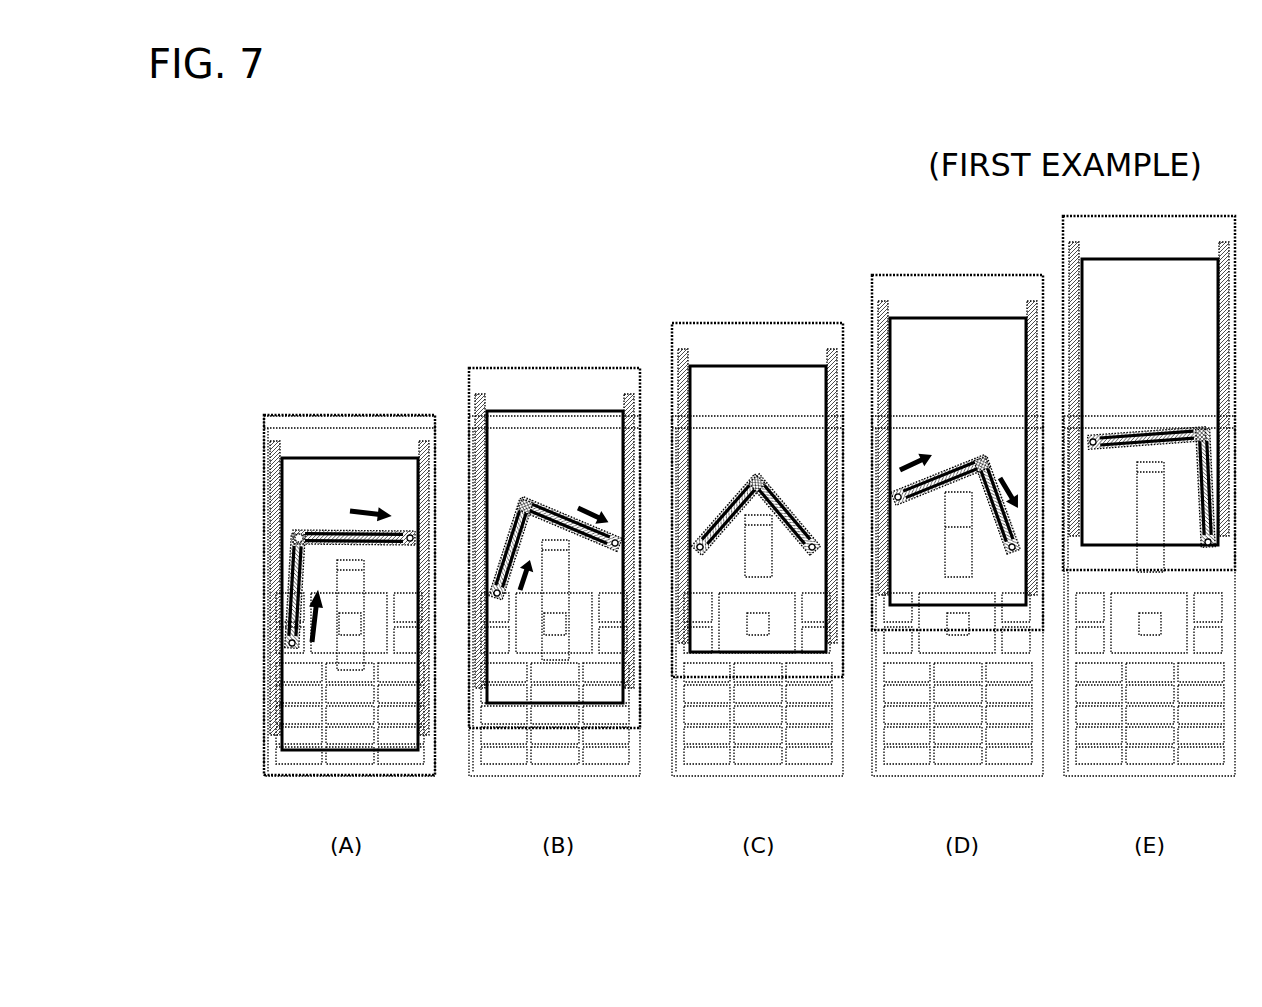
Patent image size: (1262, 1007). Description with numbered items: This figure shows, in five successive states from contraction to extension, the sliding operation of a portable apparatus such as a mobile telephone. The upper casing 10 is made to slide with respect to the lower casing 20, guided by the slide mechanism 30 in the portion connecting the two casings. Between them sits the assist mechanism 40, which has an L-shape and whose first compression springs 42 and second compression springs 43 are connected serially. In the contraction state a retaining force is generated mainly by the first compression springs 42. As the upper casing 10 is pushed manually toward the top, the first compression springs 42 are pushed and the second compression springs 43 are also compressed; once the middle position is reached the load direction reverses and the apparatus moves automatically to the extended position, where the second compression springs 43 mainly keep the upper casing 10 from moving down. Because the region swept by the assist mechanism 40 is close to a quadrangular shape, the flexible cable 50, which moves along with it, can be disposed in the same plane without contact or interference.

The upper casing 10 is at (400, 415).
The lower casing 20 is at (387, 766).
The slide mechanism 30 is at (272, 440).
The assist mechanism 40 is at (340, 530).
The first compression spring 42 is at (293, 577).
The second compression spring 43 is at (318, 527).
The flexible cable 50 is at (352, 672).